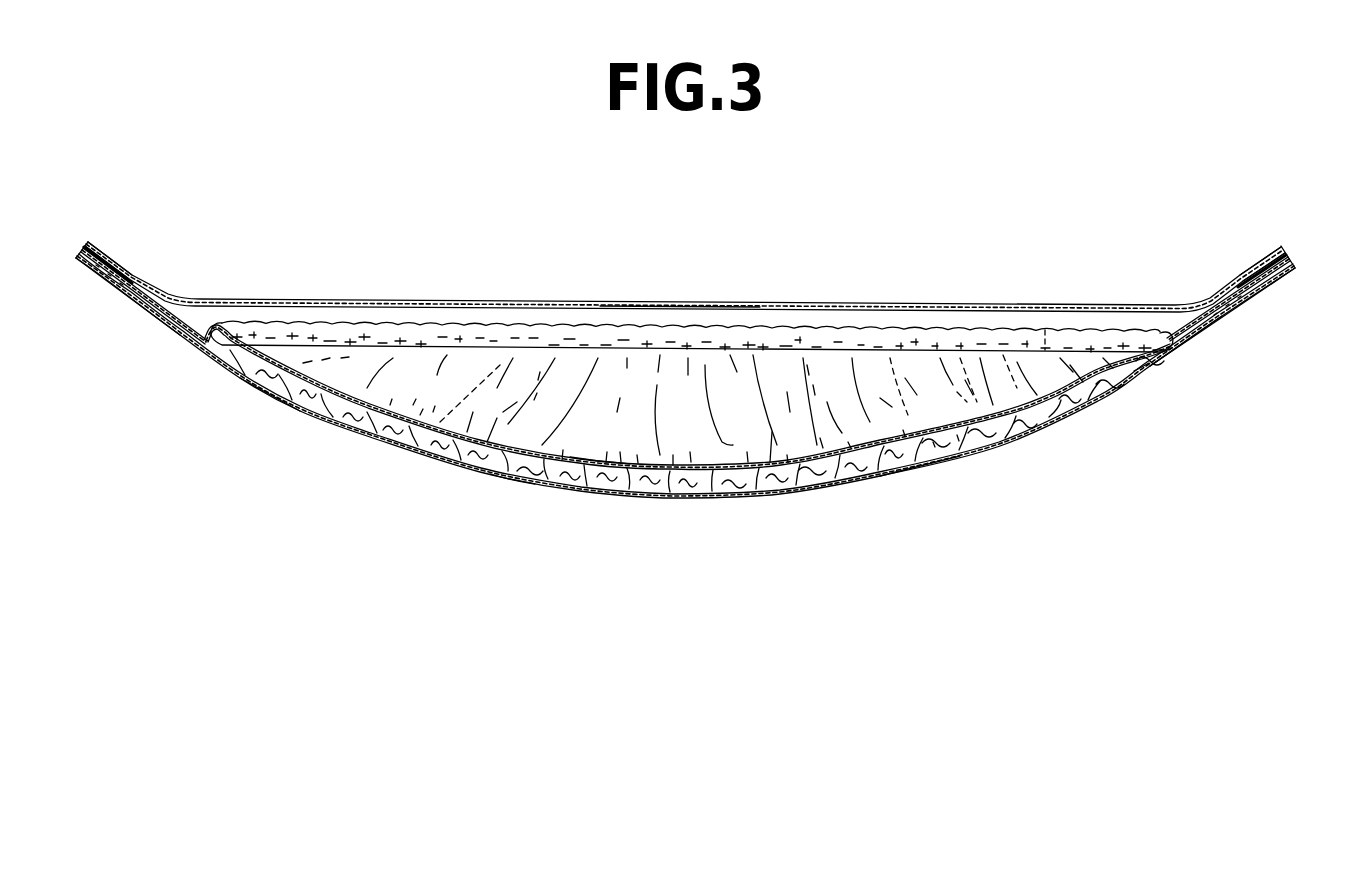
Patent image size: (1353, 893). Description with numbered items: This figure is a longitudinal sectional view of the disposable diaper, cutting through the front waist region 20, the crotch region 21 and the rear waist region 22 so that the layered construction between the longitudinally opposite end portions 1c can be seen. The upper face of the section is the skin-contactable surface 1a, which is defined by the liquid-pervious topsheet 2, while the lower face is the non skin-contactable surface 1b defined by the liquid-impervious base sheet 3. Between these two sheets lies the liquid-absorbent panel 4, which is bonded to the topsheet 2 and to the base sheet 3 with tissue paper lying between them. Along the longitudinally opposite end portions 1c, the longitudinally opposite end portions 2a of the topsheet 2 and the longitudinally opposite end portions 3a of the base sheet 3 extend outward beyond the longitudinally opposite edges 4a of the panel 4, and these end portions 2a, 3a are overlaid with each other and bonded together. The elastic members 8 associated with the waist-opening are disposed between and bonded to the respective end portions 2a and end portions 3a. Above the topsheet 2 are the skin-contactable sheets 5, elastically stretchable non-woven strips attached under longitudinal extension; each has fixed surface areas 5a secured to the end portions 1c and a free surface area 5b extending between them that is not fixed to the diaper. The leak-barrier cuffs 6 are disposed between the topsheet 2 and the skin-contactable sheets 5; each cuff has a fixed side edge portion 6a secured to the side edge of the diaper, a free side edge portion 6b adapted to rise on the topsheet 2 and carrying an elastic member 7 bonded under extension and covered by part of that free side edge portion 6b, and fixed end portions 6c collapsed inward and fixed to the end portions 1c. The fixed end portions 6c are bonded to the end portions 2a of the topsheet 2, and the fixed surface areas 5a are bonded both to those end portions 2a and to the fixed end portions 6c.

The skin-contactable surface 1a is at (589, 456).
The non skin-contactable surface 1b is at (513, 472).
The longitudinally opposite end portions 1c is at (79, 262).
The liquid-pervious topsheet 2 is at (840, 458).
The longitudinally opposite end portions of the topsheet 2a is at (126, 272).
The liquid-impervious base sheet 3 is at (676, 497).
The longitudinally opposite end portions of the base sheet 3a is at (133, 302).
The liquid-absorbent panel 4 is at (640, 482).
The longitudinally opposite edges of the core 4a is at (202, 346).
The skin-contactable sheets 5 is at (591, 298).
The fixed surface areas 5a is at (114, 263).
The free surface areas 5b is at (680, 307).
The leak-barrier cuffs 6 is at (895, 357).
The fixed side edge portions 6a is at (770, 430).
The free side edge portions 6b is at (763, 350).
The fixed longitudinally opposite end portions 6c is at (97, 242).
The elastic members 7 is at (1047, 345).
The elastic members associated with the waist-opening 8 is at (107, 282).
The front waist region 20 is at (254, 383).
The crotch region 21 is at (920, 470).
The rear waist region 22 is at (1192, 350).